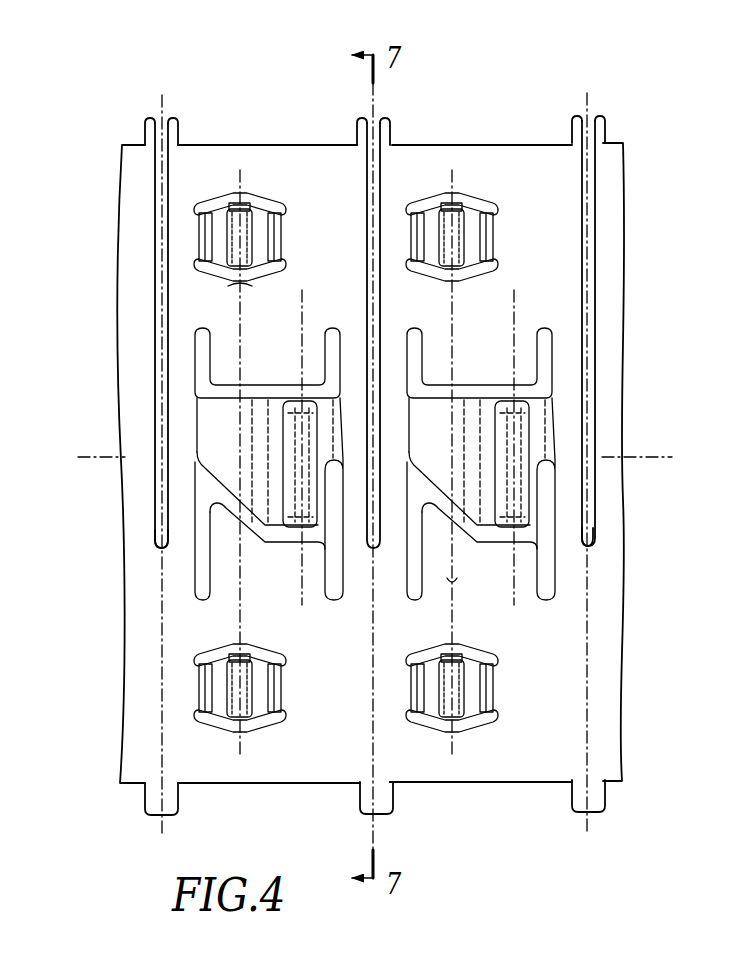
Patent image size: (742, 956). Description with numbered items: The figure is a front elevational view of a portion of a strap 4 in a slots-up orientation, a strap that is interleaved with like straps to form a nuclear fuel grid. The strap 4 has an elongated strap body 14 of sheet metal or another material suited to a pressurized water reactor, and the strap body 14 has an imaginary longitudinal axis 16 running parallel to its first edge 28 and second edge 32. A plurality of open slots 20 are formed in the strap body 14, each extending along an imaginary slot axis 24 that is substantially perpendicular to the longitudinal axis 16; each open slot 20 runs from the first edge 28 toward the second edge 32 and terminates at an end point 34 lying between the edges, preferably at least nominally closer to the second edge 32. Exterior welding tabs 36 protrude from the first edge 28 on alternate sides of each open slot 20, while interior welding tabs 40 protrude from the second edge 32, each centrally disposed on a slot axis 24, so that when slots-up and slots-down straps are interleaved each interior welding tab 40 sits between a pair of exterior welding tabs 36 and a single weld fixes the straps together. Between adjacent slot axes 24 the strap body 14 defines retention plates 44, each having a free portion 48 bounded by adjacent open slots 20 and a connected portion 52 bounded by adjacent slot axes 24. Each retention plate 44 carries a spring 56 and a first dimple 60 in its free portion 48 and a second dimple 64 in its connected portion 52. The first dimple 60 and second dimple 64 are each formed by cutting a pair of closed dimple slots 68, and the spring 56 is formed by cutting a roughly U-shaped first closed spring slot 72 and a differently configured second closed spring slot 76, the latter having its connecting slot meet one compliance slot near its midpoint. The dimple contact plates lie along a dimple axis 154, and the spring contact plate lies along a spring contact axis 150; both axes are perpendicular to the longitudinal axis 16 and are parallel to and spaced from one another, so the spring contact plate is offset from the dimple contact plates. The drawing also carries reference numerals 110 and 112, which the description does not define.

The strap 4 is at (450, 88).
The strap body 14 is at (636, 625).
The longitudinal axis 16 is at (650, 446).
The open slot 20 is at (597, 195).
The slot axis 24 is at (590, 96).
The first edge 28 is at (242, 145).
The second edge 32 is at (440, 784).
The end point 34 is at (592, 546).
The exterior welding tab 36 is at (604, 118).
The interior welding tab 40 is at (614, 838).
The retention plate 44 is at (229, 790).
The free portion 48 is at (283, 145).
The connected portion 52 is at (330, 784).
The spring 56 is at (363, 462).
The first dimple 60 is at (288, 221).
The second dimple 64 is at (291, 687).
The closed dimple slot 68 is at (515, 740).
The first closed spring slot 72 is at (470, 390).
The second closed spring slot 76 is at (468, 543).
The first leg 110 is at (407, 338).
The second leg 112 is at (562, 390).
The spring contact axis 150 is at (515, 292).
The dimple axis 154 is at (451, 576).